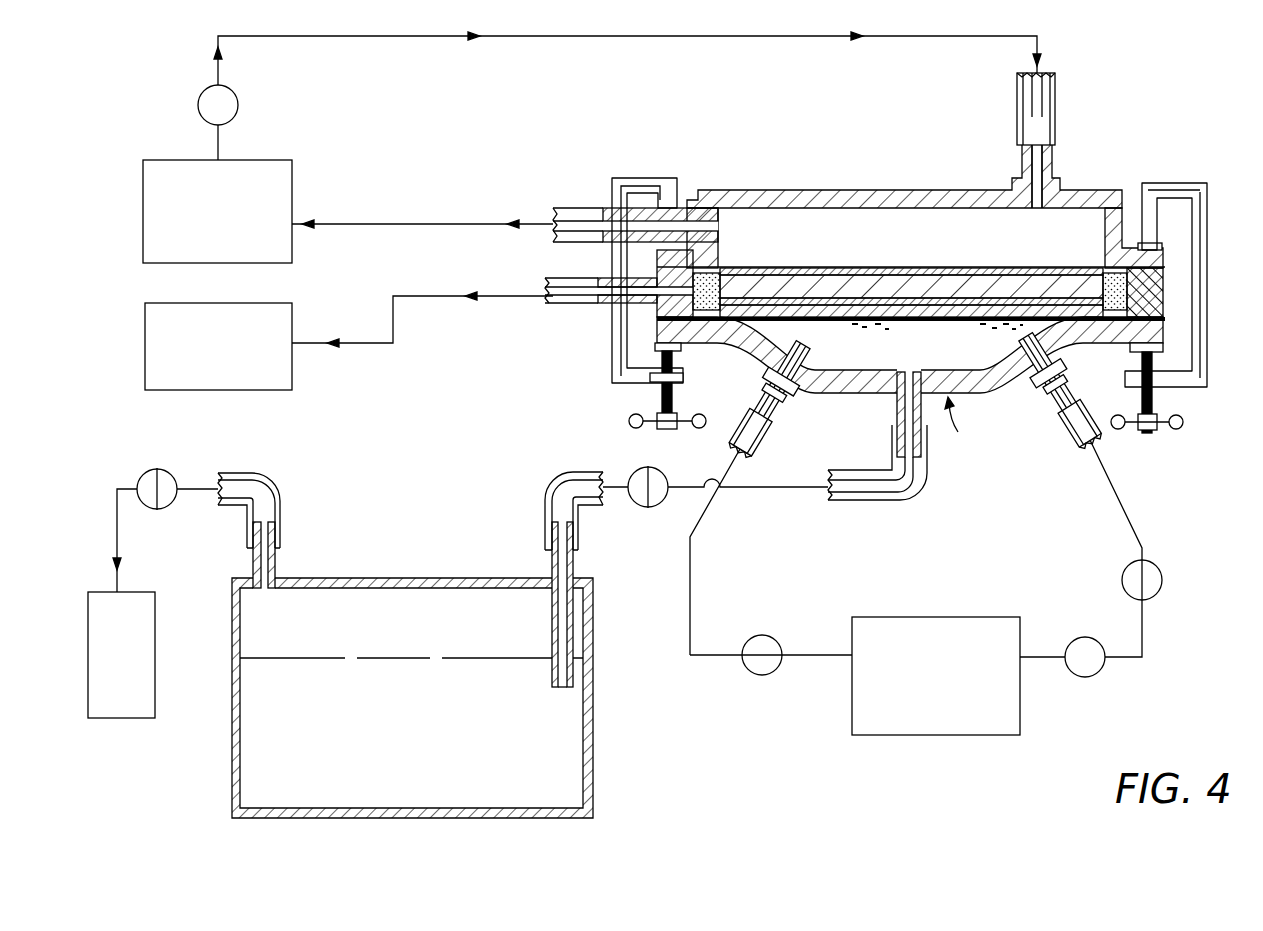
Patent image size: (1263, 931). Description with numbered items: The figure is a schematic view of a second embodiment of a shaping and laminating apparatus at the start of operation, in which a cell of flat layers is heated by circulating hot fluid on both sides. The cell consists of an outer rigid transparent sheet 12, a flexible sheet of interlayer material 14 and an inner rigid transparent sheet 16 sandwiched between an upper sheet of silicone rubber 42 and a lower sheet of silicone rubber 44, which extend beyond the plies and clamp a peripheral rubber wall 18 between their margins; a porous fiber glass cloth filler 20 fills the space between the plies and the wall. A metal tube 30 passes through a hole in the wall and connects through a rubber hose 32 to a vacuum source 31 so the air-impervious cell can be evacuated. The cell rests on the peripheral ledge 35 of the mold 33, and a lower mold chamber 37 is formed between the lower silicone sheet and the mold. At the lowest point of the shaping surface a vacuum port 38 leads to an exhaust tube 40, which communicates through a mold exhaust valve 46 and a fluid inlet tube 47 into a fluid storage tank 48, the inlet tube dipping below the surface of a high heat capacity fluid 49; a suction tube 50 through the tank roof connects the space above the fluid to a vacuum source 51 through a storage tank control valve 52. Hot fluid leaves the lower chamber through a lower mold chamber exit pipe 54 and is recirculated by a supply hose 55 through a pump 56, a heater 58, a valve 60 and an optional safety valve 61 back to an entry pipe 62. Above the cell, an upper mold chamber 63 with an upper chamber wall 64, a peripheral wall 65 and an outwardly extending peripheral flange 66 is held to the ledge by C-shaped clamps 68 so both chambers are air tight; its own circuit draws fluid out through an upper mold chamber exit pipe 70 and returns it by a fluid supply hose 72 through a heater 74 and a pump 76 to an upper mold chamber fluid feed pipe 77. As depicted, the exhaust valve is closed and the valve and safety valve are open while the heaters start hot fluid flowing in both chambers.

The outer rigid transparent sheet 12 is at (852, 322).
The flexible sheet of interlayer material 14 is at (846, 300).
The inner rigid transparent sheet 16 is at (787, 283).
The peripheral rubber wall 18 is at (1165, 298).
The porous fiber glass cloth filler 20 is at (1107, 295).
The metal tube 30 is at (642, 313).
The vacuum source 31 is at (262, 390).
The rubber hose 32 is at (565, 313).
The mold 33 is at (955, 427).
The peripheral ledge 35 is at (1123, 340).
The lower mold chamber 37 is at (850, 360).
The vacuum port 38 is at (900, 397).
The exhaust tube 40 is at (882, 500).
The upper sheet of silicone rubber 42 is at (760, 268).
The lower sheet of silicone rubber 44 is at (945, 322).
The mold exhaust valve 46 is at (657, 507).
The fluid inlet tube 47 is at (552, 553).
The fluid storage tank 48 is at (593, 755).
The high heat capacity fluid 49 is at (425, 650).
The suction tube 50 is at (275, 568).
The vacuum source 51 is at (127, 718).
The storage tank control valve 52 is at (147, 472).
The lower mold chamber exit pipe 54 is at (1040, 395).
The supply hose 55 is at (763, 437).
The pump 56 is at (1085, 637).
The heater 58 is at (947, 735).
The valve 60 is at (1162, 575).
The safety valve 61 is at (762, 635).
The entry pipe 62 is at (757, 395).
The upper mold chamber 63 is at (747, 217).
The upper chamber wall 64 is at (803, 190).
The peripheral wall 65 is at (1100, 220).
The peripheral flange 66 is at (1125, 256).
The clamps 68 is at (643, 178).
The upper mold chamber exit pipe 70 is at (650, 237).
The fluid supply hose 72 is at (583, 208).
The heater 74 is at (292, 185).
The pump 76 is at (238, 103).
The upper mold chamber fluid feed pipe 77 is at (1052, 158).